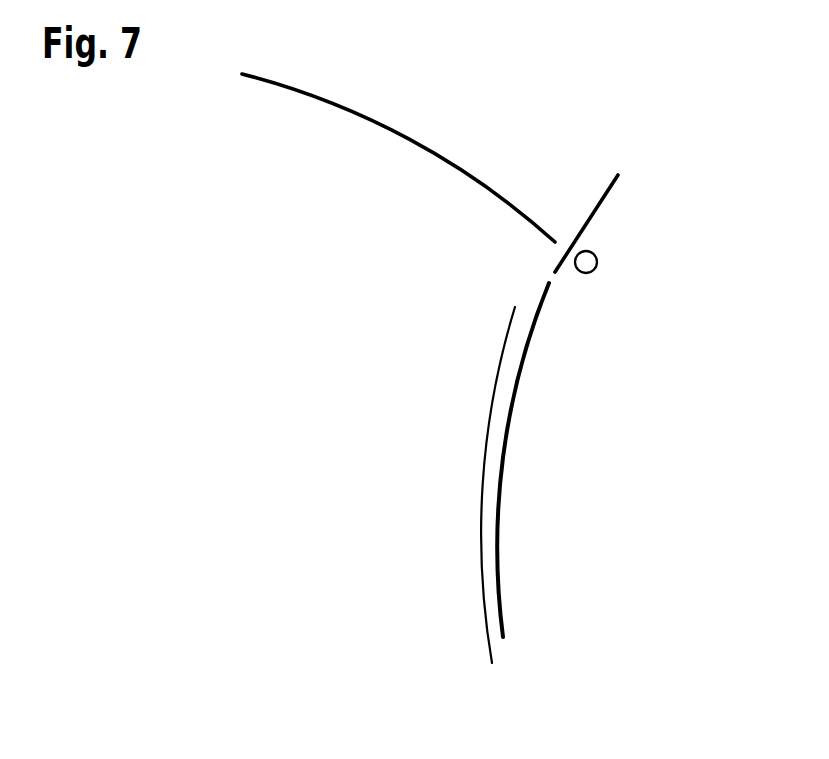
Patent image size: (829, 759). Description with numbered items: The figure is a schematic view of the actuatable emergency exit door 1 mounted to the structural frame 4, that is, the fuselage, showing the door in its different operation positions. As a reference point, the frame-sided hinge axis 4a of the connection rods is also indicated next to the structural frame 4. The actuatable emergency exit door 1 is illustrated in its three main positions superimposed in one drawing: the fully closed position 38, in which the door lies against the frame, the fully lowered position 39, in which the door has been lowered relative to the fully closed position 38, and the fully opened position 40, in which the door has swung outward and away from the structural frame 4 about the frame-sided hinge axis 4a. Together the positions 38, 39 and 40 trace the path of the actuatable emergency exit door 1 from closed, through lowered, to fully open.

The actuatable emergency exit door 1 is at (428, 338).
The structural frame 4 is at (598, 197).
The frame-sided hinge axis 4a is at (613, 259).
The fully closed position 38 is at (503, 603).
The fully lowered position 39 is at (480, 535).
The fully opened position 40 is at (292, 90).